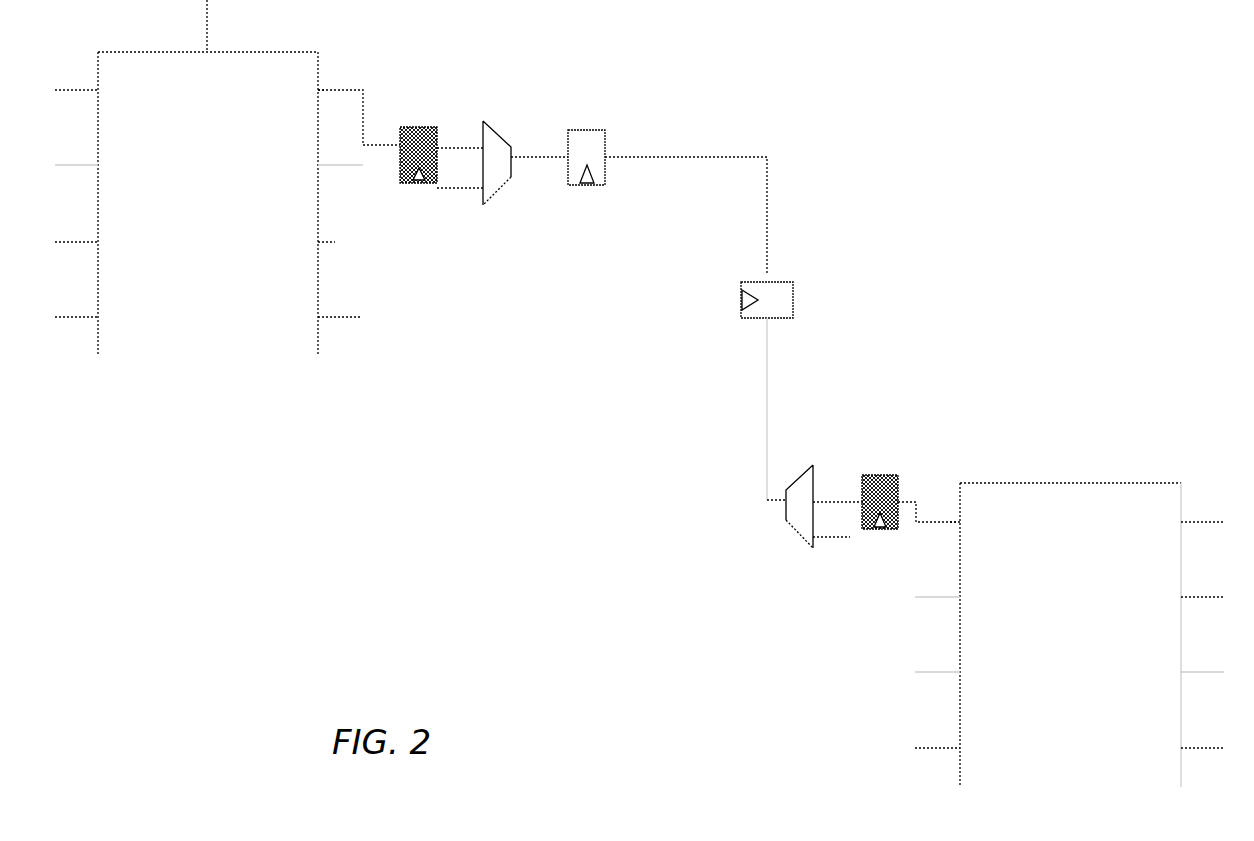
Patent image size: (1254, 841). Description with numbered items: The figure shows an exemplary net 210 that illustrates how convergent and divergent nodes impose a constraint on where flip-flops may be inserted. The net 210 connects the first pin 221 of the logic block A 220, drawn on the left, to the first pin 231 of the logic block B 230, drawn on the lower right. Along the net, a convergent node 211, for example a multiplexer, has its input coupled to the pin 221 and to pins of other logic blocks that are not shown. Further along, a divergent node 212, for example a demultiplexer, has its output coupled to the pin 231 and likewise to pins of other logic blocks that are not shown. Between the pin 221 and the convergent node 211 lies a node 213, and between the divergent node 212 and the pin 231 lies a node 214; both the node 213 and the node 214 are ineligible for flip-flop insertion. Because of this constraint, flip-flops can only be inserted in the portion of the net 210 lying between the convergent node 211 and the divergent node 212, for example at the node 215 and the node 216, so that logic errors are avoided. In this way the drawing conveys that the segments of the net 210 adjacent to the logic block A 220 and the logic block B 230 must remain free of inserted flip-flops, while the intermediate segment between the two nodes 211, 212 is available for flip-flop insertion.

The net 210 is at (767, 172).
The convergent node 211 is at (496, 133).
The divergent node 212 is at (800, 535).
The node 213 is at (419, 185).
The node 214 is at (880, 527).
The node 215 is at (582, 187).
The node 216 is at (742, 297).
The logic block A 220 is at (231, 177).
The Pin-A1 221 is at (311, 87).
The logic block B 230 is at (1069, 630).
The Pin-B1 231 is at (952, 510).